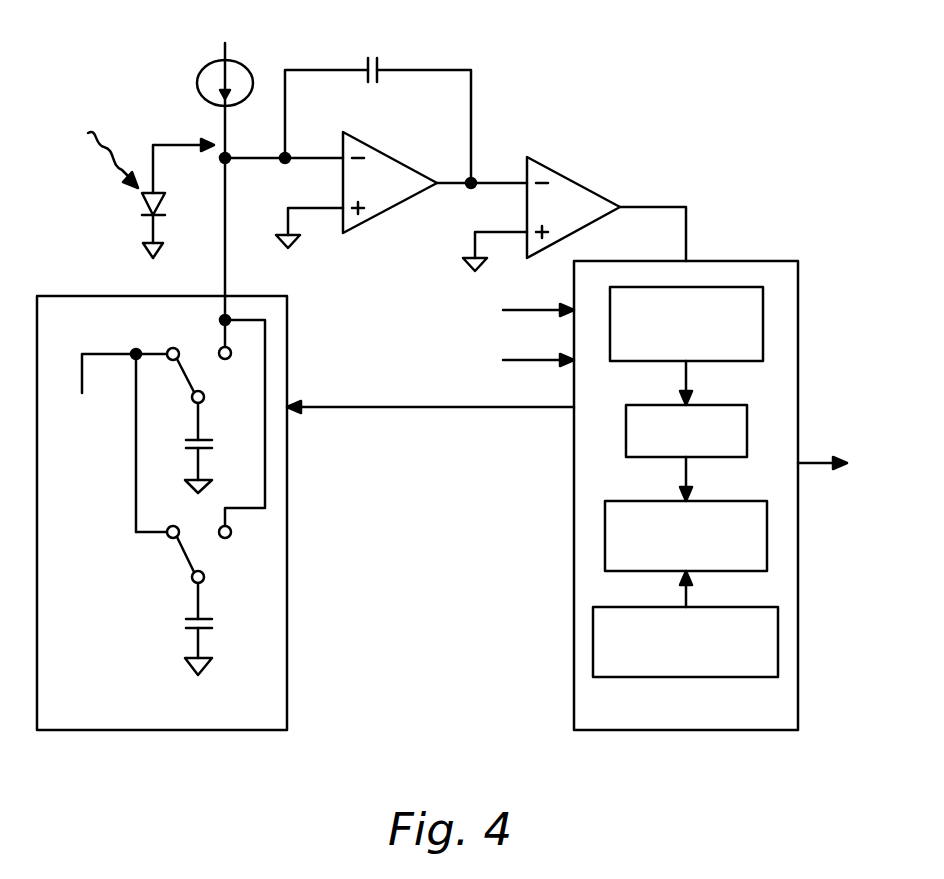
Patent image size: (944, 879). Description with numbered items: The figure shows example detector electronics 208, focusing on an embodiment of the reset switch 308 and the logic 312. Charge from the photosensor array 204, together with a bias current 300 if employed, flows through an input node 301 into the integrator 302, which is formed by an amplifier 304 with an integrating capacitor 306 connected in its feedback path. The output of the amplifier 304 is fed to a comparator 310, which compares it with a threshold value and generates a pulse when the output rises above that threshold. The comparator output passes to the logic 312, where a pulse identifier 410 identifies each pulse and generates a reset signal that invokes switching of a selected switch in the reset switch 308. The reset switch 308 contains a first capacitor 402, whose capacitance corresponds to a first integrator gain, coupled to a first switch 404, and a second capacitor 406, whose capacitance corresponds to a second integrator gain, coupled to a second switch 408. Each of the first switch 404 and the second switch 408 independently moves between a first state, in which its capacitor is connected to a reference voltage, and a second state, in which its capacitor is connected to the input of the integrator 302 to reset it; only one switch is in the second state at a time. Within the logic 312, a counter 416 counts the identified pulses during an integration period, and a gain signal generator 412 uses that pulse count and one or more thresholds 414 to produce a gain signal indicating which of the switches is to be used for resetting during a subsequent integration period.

The photosensor array 204 is at (110, 236).
The electronics 208 is at (589, 396).
The bias current 300 is at (168, 73).
The input node 301 is at (320, 35).
The integrator 302 is at (426, 133).
The amplifier 304 is at (396, 156).
The integrating capacitor 306 is at (372, 55).
The reset switch 308 is at (212, 513).
The comparator 310 is at (574, 176).
The logic 312 is at (697, 495).
The first capacitor 402 is at (185, 441).
The first switch 404 is at (219, 427).
The second capacitor 406 is at (186, 625).
The second switch 408 is at (236, 600).
The pulse identifier 410 is at (763, 329).
The gain signal generator 412 is at (605, 535).
The thresholds 414 is at (593, 645).
The counter 416 is at (626, 430).